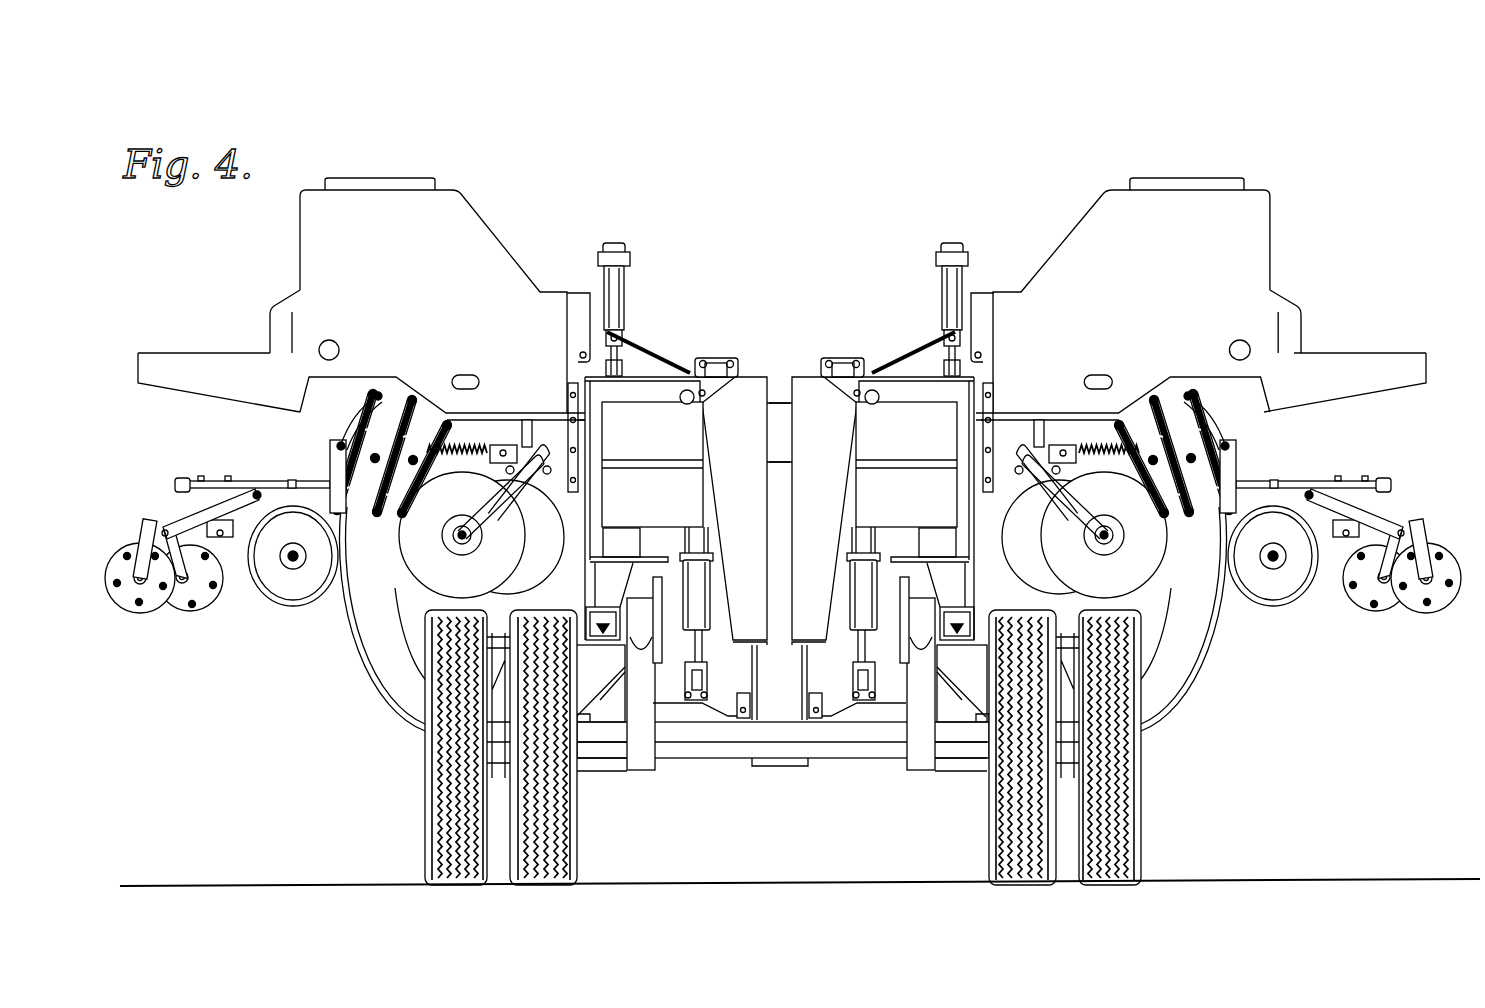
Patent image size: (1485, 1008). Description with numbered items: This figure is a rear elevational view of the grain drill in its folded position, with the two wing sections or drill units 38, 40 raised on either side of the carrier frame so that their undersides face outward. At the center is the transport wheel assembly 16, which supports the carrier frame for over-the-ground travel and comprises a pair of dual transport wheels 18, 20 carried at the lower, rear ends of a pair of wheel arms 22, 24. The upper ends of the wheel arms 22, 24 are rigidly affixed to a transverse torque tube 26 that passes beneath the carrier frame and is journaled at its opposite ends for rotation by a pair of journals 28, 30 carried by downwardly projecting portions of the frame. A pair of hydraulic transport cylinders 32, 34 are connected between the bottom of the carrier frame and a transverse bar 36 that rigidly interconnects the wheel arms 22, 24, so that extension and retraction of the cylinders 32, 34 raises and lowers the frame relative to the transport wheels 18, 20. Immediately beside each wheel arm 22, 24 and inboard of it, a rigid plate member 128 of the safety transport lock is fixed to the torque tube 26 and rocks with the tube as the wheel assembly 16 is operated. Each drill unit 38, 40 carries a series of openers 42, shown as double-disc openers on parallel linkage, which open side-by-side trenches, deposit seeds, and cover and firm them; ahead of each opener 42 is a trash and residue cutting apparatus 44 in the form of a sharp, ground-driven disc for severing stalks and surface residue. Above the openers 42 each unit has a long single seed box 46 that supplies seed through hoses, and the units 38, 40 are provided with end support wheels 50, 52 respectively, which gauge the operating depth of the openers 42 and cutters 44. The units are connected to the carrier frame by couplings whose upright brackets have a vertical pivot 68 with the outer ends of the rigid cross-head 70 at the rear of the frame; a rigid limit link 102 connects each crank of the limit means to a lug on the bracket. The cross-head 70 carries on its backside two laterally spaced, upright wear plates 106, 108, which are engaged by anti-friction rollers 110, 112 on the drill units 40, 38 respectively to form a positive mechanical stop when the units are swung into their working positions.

The transport wheel assembly 16 is at (722, 776).
The dual transport wheel 18 is at (1128, 825).
The dual transport wheel 20 is at (447, 823).
The wheel arm 22 is at (913, 703).
The wheel arm 24 is at (640, 698).
The torque tube 26 is at (720, 626).
The journal 28 is at (952, 640).
The journal 30 is at (603, 640).
The hydraulic transport cylinder 32 is at (845, 573).
The hydraulic transport cylinder 34 is at (697, 573).
The transverse bar 36 is at (820, 753).
The drill unit 38 is at (1252, 143).
The drill unit 40 is at (237, 305).
The opener 42 is at (240, 603).
The trash and residue cutting apparatus 44 is at (428, 575).
The seed box 46 is at (333, 215).
The end support wheel 50 is at (1208, 704).
The end support wheel 52 is at (392, 682).
The vertical pivot 68 is at (627, 390).
The cross-head 70 is at (652, 420).
The limit link 102 is at (622, 285).
The wear plate 106 is at (748, 390).
The wear plate 108 is at (810, 393).
The anti-friction roller 110 is at (583, 350).
The anti-friction roller 112 is at (978, 298).
The plate member 128 is at (658, 630).